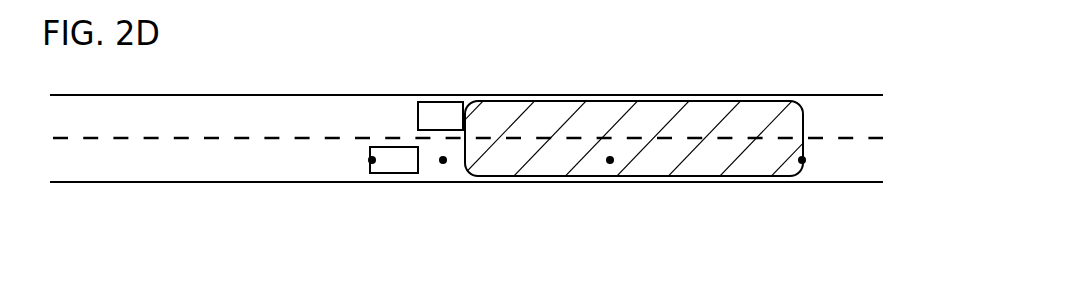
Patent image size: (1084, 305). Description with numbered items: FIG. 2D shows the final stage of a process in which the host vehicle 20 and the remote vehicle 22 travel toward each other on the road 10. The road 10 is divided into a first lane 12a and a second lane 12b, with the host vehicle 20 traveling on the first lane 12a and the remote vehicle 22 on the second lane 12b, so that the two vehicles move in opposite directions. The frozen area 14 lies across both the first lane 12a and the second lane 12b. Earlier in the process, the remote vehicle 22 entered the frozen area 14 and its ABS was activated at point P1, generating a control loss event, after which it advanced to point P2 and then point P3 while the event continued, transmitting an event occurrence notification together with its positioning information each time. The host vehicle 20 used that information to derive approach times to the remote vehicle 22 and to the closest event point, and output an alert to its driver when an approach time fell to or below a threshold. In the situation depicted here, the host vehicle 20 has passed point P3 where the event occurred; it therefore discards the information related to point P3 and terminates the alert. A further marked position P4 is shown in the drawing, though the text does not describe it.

The road 10 is at (840, 95).
The first lane 12a is at (868, 118).
The second lane 12b is at (868, 163).
The frozen area 14 is at (598, 118).
The host vehicle 20 is at (445, 102).
The remote vehicle 22 is at (418, 161).
The point P1 is at (810, 164).
The point P2 is at (604, 163).
The point P3 is at (448, 164).
The position P4 is at (364, 162).